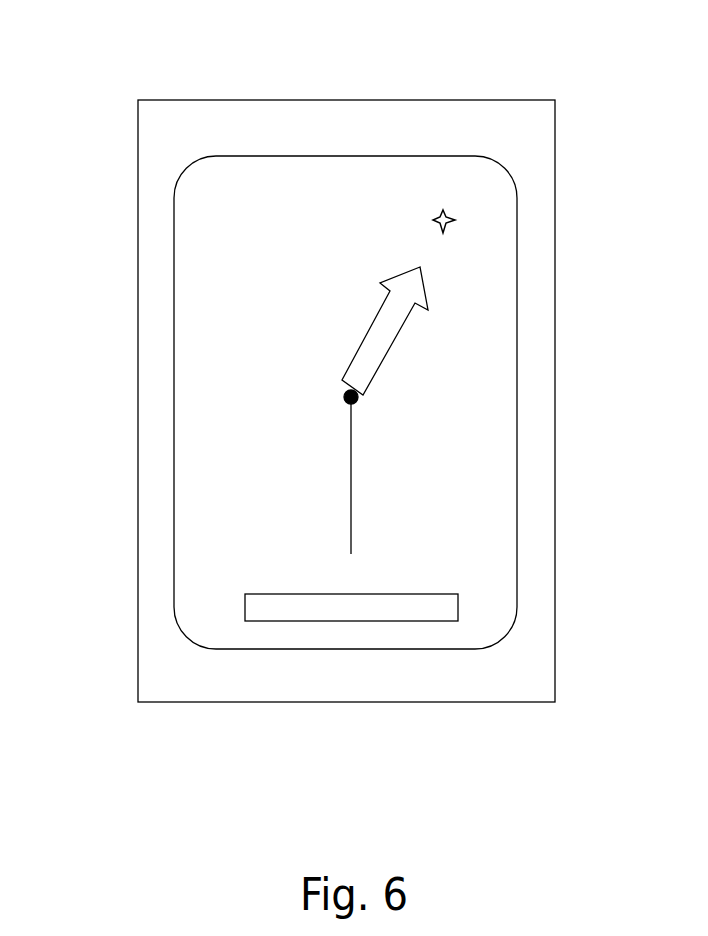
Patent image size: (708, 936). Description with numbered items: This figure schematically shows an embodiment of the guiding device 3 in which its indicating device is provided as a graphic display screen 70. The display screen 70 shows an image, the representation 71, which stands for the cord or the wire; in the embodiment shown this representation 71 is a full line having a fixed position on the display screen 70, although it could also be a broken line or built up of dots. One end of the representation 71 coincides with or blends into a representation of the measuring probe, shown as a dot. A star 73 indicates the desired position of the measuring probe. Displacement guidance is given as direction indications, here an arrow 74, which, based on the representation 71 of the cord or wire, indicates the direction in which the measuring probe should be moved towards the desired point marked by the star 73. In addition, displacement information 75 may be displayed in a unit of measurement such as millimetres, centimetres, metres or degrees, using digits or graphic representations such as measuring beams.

The guiding device 3 is at (523, 690).
The graphic display screen 70 is at (213, 156).
The representation of the cord or wire 71 is at (351, 479).
The star 73 is at (445, 208).
The arrow 74 is at (380, 329).
The displacement information 75 is at (261, 609).